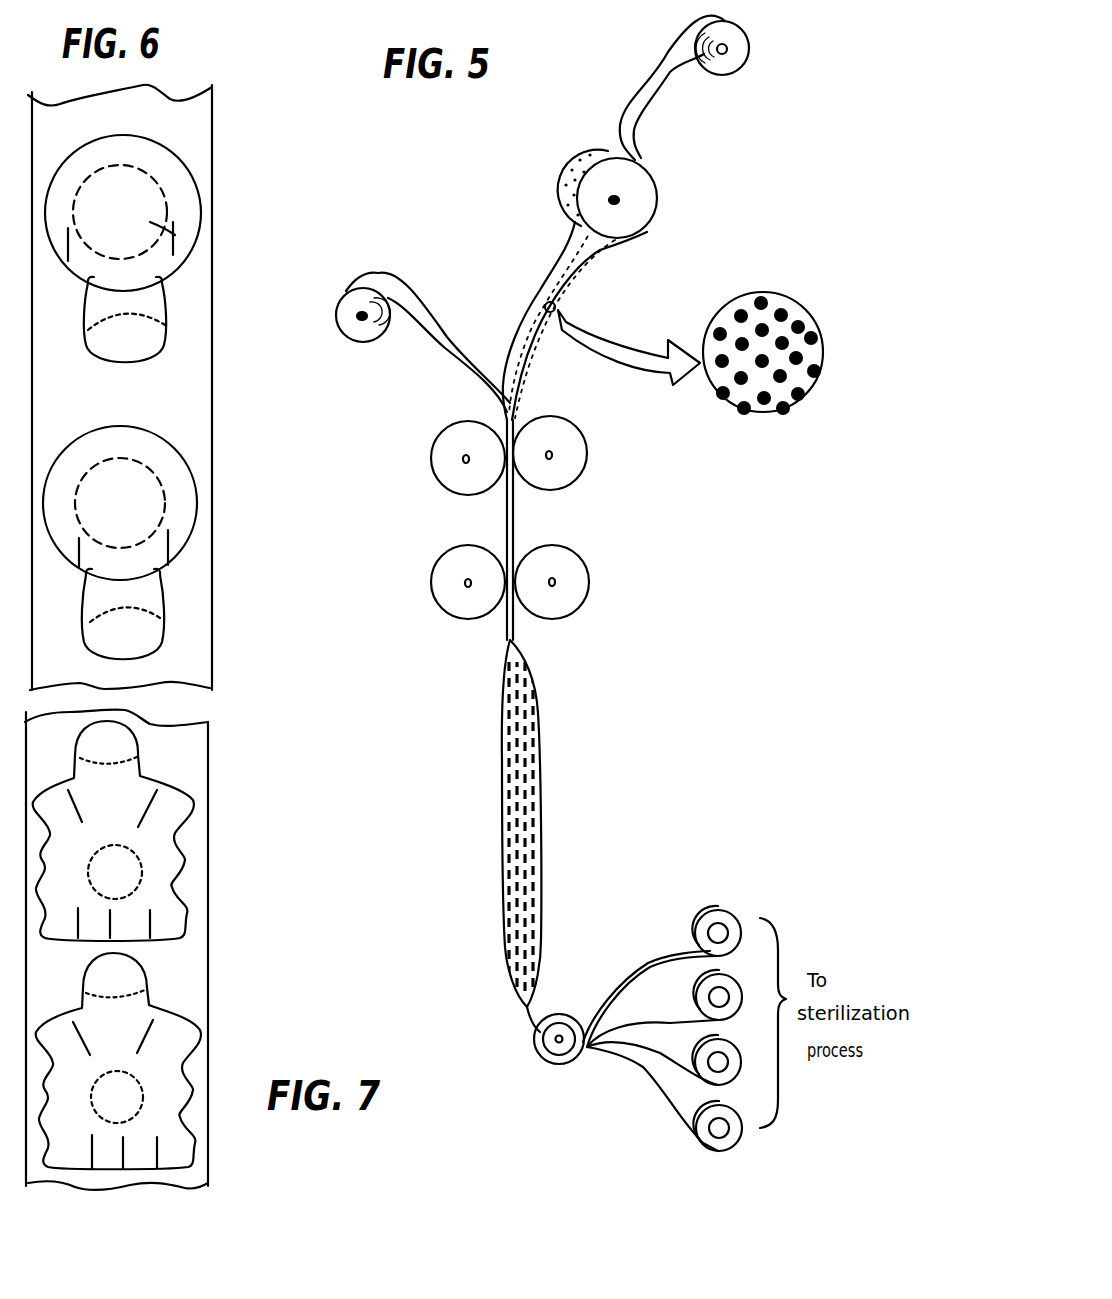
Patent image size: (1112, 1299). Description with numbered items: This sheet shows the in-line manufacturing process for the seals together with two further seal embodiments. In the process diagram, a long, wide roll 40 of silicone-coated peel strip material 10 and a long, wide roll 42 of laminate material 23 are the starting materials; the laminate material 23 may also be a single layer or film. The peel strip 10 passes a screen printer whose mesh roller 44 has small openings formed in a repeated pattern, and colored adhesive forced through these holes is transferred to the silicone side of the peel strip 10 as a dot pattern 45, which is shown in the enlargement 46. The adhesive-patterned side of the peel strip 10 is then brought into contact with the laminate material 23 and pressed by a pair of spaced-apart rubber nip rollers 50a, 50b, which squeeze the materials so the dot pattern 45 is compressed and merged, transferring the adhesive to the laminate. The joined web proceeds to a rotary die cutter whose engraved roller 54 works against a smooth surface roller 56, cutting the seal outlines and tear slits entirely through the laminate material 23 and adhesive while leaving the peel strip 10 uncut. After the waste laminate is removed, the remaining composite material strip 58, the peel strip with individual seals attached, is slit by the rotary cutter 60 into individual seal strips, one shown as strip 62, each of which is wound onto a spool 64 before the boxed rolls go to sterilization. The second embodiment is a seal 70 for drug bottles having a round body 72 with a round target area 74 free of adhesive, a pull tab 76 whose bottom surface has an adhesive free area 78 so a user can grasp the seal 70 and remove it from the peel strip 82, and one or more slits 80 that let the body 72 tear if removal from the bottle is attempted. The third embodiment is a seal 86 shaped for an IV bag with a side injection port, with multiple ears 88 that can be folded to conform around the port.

In FIG. 5, the silicone-coated peel strip material 10 is at (665, 68).
In FIG. 5, the roll of peel strip material 40 is at (748, 45).
In FIG. 5, the mesh roller 44 is at (643, 202).
In FIG. 5, the roll of laminate material 42 is at (338, 312).
In FIG. 5, the laminate material 23 is at (442, 337).
In FIG. 5, the dot pattern 45 is at (741, 316).
In FIG. 5, the enlargement 46 is at (782, 290).
In FIG. 5, the rubber nip roller 50a is at (442, 433).
In FIG. 5, the rubber nip roller 50b is at (583, 448).
In FIG. 5, the rotary die cutter roller 54 is at (435, 580).
In FIG. 5, the smooth surface roller 56 is at (583, 590).
In FIG. 5, the composite material strip 58 is at (540, 760).
In FIG. 5, the rotary cutter 60 is at (565, 1013).
In FIG. 5, the individual seal strip 62 is at (640, 973).
In FIG. 5, the spool 64 is at (727, 925).
In FIG. 6, the seal 70 is at (190, 160).
In FIG. 6, the round body 72 is at (184, 205).
In FIG. 6, the round target area 74 is at (175, 235).
In FIG. 6, the slits 80 is at (173, 248).
In FIG. 6, the pull tab 76 is at (167, 310).
In FIG. 6, the adhesive free area 78 is at (148, 340).
In FIG. 6, the peel strip 82 is at (213, 442).
In FIG. 7, the seal 86 is at (222, 823).
In FIG. 7, the ears 88 is at (180, 920).